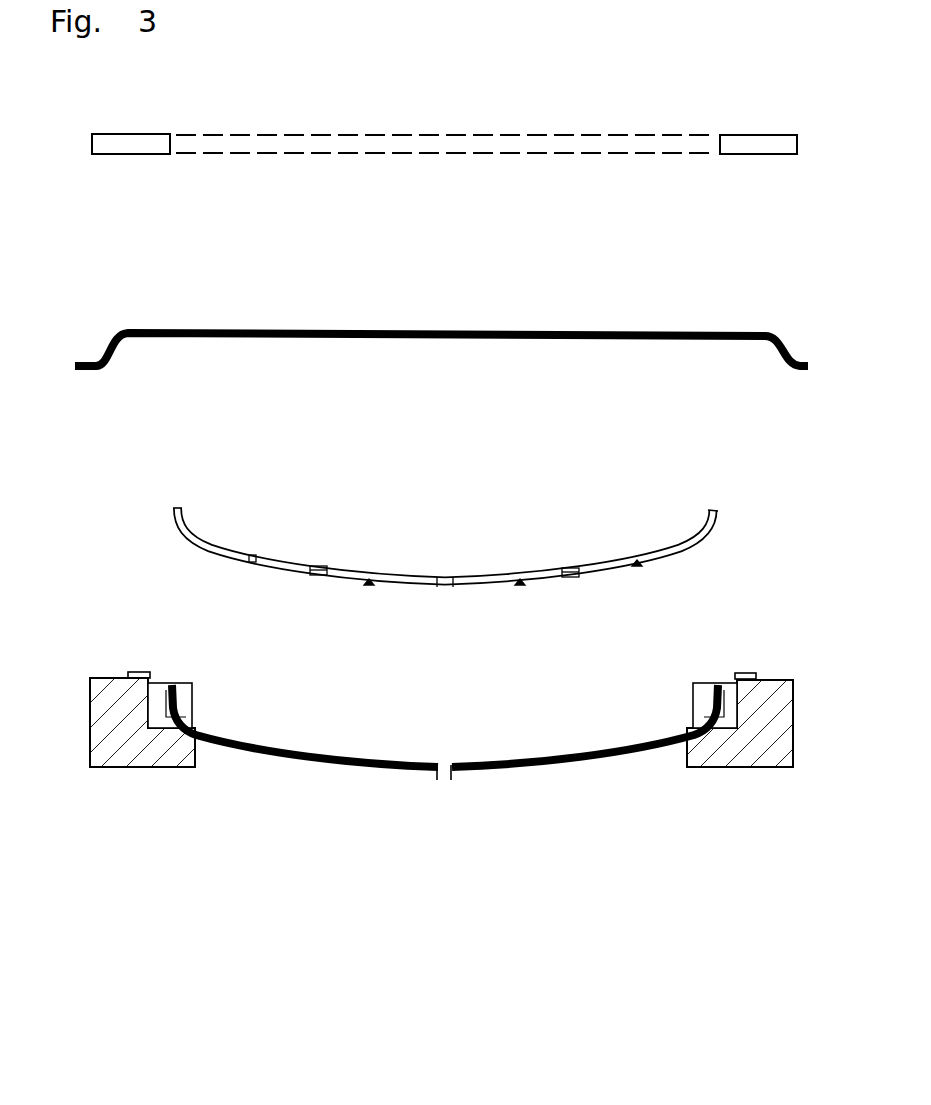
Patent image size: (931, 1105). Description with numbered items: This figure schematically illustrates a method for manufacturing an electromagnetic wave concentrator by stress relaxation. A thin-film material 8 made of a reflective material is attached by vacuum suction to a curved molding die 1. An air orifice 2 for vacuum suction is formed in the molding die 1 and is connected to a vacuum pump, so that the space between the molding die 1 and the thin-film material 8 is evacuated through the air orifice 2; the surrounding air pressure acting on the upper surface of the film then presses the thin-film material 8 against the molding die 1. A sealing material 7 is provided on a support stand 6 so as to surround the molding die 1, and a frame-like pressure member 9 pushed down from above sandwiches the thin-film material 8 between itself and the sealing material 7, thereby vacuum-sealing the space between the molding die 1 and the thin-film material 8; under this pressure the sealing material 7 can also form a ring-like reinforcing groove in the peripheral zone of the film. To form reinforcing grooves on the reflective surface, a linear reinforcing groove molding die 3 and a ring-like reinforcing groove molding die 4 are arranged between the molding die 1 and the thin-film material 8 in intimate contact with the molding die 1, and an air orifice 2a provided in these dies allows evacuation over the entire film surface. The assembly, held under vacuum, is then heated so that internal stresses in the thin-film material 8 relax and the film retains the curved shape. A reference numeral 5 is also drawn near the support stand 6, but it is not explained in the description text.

The molding die 1 is at (310, 763).
The air orifice 2 is at (452, 577).
The air orifice 2a is at (256, 562).
The linear reinforcing groove molding die 3 is at (717, 514).
The ring-like reinforcing groove molding die 4 is at (318, 568).
The holder 5 is at (163, 717).
The support stand 6 is at (125, 755).
The sealing material 7 is at (136, 672).
The thin-film material 8 is at (718, 332).
The pressure member 9 is at (730, 146).